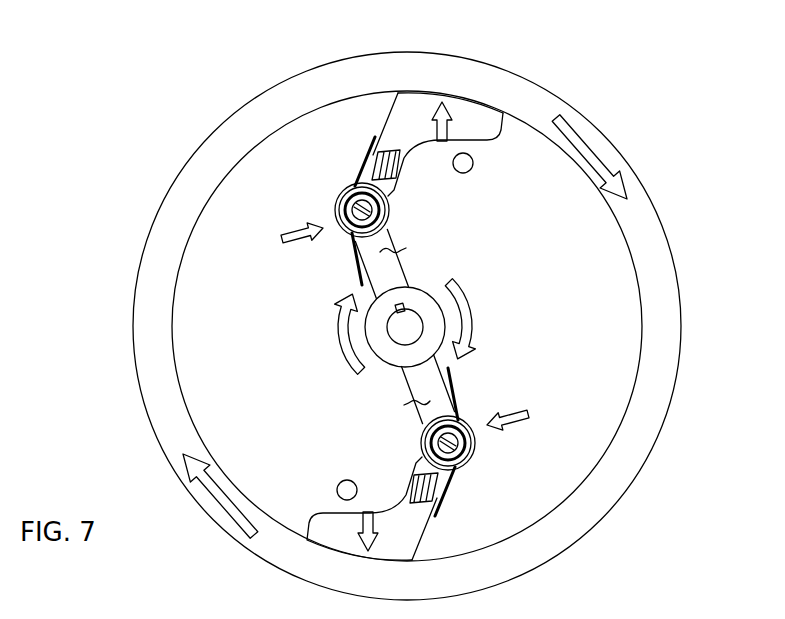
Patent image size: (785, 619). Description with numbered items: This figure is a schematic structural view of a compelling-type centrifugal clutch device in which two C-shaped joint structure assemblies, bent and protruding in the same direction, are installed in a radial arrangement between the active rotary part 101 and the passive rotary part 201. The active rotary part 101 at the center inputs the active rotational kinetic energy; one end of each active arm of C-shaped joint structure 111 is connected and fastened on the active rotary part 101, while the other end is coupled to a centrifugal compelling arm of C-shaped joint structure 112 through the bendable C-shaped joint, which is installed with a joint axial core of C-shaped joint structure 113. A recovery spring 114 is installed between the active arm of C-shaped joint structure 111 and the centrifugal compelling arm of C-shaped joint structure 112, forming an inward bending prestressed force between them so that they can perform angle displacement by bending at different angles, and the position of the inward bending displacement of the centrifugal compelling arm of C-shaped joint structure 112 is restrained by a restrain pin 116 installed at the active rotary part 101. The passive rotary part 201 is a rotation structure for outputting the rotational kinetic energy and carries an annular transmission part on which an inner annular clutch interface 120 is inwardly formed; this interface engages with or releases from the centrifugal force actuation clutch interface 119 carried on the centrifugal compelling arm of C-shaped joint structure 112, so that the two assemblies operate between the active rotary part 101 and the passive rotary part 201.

The passive rotary part 201 is at (245, 128).
The inner annular clutch interface 120 is at (622, 232).
The active rotary part 101 is at (405, 328).
The active arm of C-shaped joint structure 111 is at (397, 273).
The centrifugal compelling arm of C-shaped joint structure 112 is at (383, 118).
The joint axial core of C-shaped joint structure 113 is at (347, 210).
The recovery spring 114 is at (355, 262).
The restrain pin 116 is at (470, 170).
The centrifugal force actuation clutch interface 119 is at (462, 97).